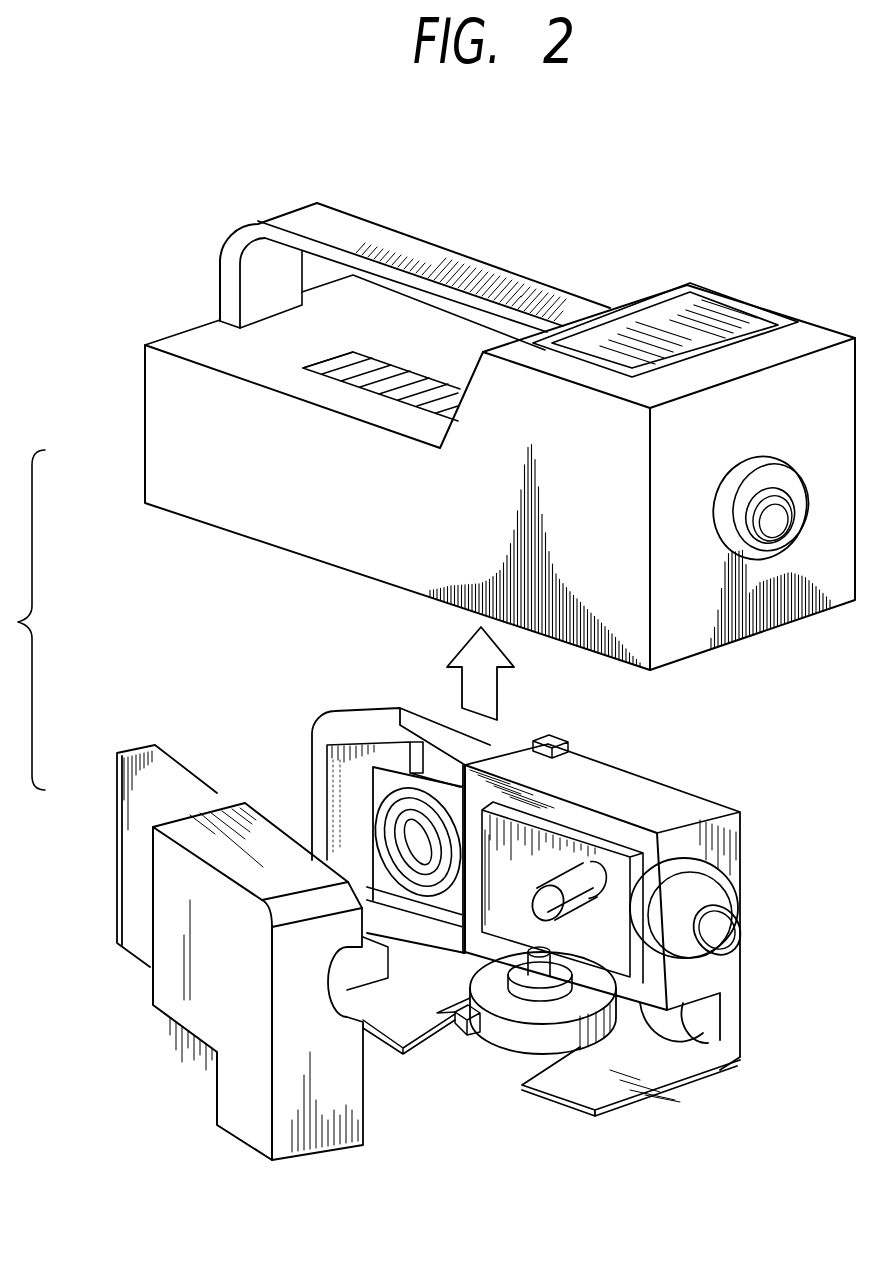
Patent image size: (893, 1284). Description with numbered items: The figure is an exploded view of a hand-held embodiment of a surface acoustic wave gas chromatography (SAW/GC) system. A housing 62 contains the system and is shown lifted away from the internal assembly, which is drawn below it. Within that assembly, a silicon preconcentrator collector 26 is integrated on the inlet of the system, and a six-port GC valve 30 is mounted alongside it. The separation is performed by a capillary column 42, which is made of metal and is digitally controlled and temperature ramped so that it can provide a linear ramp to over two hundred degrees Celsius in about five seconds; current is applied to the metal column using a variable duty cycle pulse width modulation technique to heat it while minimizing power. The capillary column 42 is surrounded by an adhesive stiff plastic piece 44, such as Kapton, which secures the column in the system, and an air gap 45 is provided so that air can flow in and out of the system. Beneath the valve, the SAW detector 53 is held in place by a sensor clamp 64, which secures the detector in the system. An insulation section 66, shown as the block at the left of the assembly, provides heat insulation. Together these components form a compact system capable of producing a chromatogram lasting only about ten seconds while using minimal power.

The housing 62 is at (165, 455).
The air gap 45 is at (222, 793).
The stiff plastic piece 44 is at (322, 765).
The capillary column 42 is at (358, 778).
The six-port GC valve 30 is at (557, 868).
The silicon preconcentrator collector 26 is at (697, 903).
The SAW detector 53 is at (500, 1042).
The sensor clamp 64 is at (618, 1102).
The insulation section 66 is at (285, 1160).